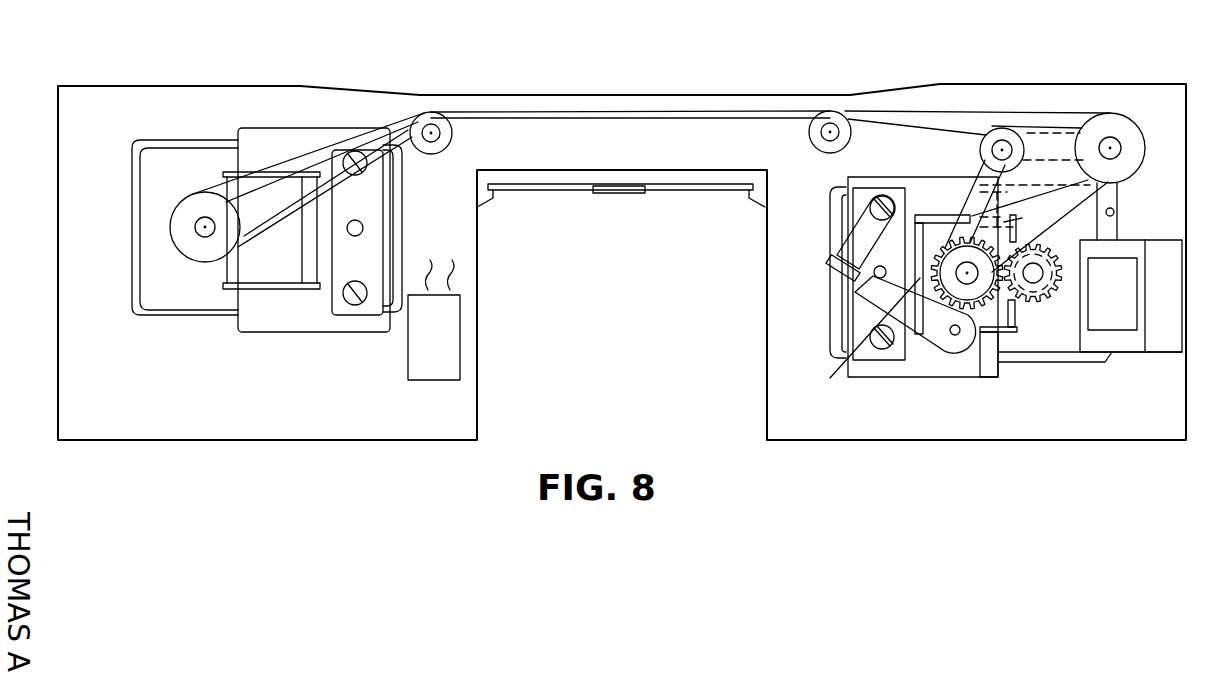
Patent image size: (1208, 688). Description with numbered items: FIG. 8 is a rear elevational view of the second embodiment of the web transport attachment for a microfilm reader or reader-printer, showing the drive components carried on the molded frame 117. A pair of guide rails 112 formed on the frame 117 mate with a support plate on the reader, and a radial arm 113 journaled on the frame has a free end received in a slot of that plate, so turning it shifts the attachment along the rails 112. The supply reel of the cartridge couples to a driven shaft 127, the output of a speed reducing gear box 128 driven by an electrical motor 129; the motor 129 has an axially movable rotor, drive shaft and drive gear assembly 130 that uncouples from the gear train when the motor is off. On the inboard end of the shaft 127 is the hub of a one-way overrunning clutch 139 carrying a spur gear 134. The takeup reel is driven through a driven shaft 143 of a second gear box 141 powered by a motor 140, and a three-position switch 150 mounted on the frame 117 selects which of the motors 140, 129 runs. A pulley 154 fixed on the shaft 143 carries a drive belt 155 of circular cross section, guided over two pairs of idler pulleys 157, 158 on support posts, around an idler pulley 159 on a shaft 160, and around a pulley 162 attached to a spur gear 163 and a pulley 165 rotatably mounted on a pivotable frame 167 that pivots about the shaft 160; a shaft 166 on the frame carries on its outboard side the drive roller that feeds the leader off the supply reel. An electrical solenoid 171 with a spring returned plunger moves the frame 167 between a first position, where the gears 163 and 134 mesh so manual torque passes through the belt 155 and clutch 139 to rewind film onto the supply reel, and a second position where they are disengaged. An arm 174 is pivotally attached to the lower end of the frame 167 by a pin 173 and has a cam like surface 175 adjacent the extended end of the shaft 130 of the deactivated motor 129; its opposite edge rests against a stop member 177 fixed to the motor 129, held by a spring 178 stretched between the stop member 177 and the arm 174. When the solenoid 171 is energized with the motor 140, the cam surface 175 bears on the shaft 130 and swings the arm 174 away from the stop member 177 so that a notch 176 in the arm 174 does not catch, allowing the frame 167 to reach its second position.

The guide rails 112 is at (750, 196).
The radial arm 113 is at (615, 193).
The molded frame 117 is at (810, 446).
The driven shaft 127 is at (1040, 273).
The gear box 128 is at (1057, 357).
The electrical motor 129 is at (942, 233).
The drive gear assembly 130 is at (880, 266).
The spur gear 134 is at (1030, 307).
The one-way overrunning clutch 139 is at (1044, 300).
The motor 140 is at (263, 290).
The gear box 141 is at (172, 306).
The driven shaft 143 is at (200, 227).
The three position switch 150 is at (462, 340).
The pulley 154 is at (190, 216).
The drive belt 155 is at (645, 113).
The idler pulleys 157 is at (431, 112).
The idler pulleys 158 is at (830, 111).
The idler pulley 159 is at (997, 128).
The shaft 160 is at (1010, 140).
The pulley 162 is at (972, 296).
The spur gear 163 is at (1013, 237).
The pulley 165 is at (1130, 170).
The pulley 166 is at (1115, 145).
The pivotable frame 167 is at (1075, 128).
The electrical solenoid 171 is at (1120, 322).
The pin 173 is at (952, 338).
The arm 174 is at (907, 312).
The cam like surface 175 is at (842, 358).
The notch 176 is at (852, 287).
The stop member 177 is at (858, 235).
The spring 178 is at (845, 258).